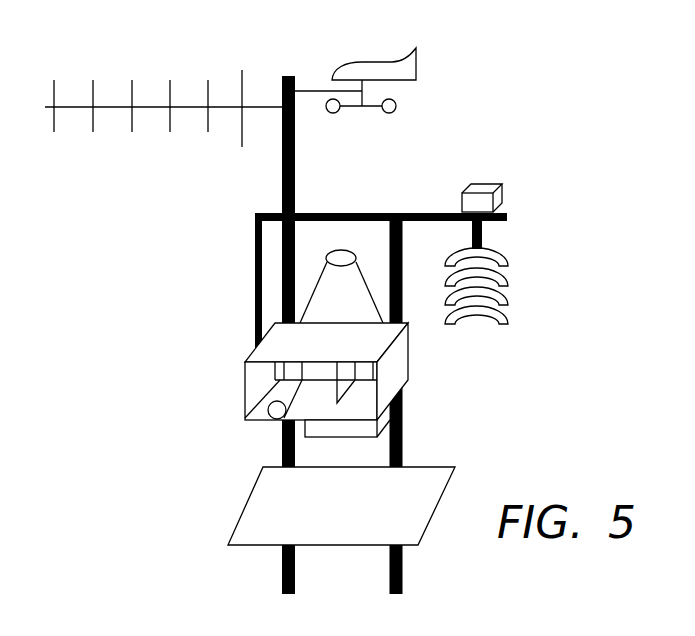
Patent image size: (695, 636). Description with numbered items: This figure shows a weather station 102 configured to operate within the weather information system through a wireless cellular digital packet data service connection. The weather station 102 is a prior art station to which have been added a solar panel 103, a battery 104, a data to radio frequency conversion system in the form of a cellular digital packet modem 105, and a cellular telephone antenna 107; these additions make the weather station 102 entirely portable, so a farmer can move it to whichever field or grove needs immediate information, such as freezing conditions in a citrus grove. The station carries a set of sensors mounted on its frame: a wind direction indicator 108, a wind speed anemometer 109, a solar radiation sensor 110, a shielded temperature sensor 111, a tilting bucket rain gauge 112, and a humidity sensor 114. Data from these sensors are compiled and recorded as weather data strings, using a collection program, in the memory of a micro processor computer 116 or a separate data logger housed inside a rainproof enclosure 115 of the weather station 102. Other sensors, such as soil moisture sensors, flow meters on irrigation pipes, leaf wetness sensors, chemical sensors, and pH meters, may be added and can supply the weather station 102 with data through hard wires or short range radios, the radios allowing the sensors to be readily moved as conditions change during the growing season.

The weather station 102 is at (180, 528).
The solar panel 103 is at (262, 498).
The battery 104 is at (353, 437).
The cellular digital packet modem 105 is at (278, 385).
The cellular telephone antenna 107 is at (191, 106).
The wind direction indicator 108 is at (417, 63).
The wind speed anemometer 109 is at (397, 108).
The solar radiation sensor 110 is at (488, 183).
The shielded temperature sensor 111 is at (508, 320).
The tilting bucket rain gauge 112 is at (343, 249).
The humidity sensor 114 is at (268, 411).
The rainproof enclosure 115 is at (395, 365).
The micro processor computer 116 is at (353, 393).